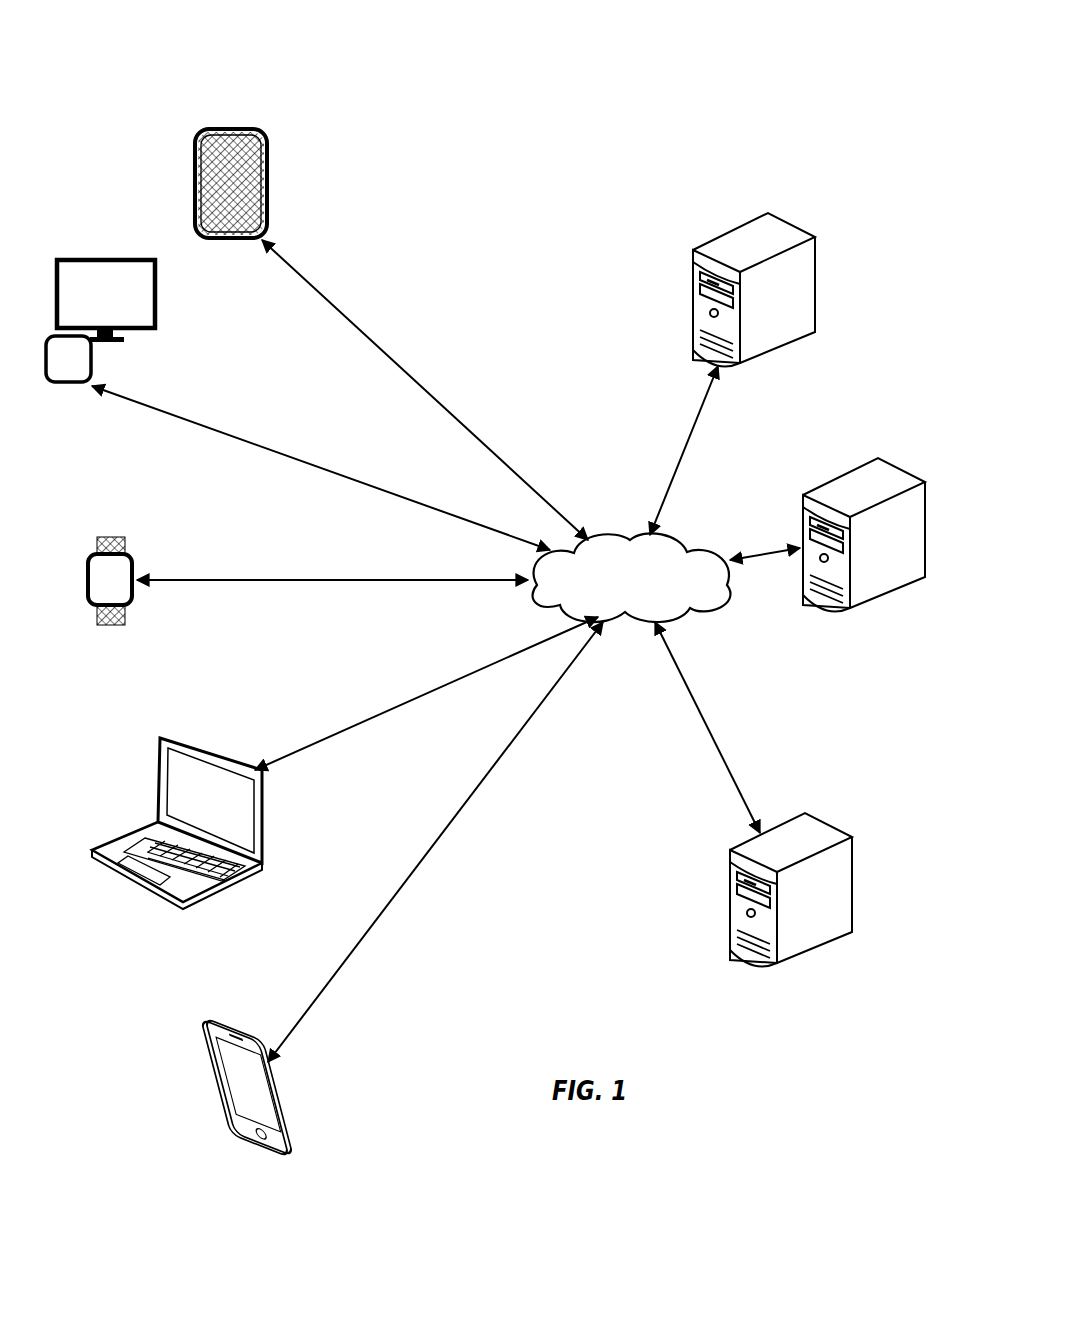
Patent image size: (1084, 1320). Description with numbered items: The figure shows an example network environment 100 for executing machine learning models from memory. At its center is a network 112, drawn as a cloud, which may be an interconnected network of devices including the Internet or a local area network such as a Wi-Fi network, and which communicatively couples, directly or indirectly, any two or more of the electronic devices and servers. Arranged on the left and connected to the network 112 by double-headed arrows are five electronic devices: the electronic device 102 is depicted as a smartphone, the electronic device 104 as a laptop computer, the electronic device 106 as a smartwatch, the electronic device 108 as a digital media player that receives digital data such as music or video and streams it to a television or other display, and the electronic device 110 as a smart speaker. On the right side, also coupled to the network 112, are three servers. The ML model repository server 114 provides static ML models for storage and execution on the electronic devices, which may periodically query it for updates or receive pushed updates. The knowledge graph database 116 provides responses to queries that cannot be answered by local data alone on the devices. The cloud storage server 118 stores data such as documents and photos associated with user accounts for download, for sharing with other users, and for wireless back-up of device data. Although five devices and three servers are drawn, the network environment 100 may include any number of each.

The network environment 100 is at (92, 88).
The electronic device 102 is at (242, 1146).
The electronic device 104 is at (178, 905).
The electronic device 106 is at (100, 625).
The electronic device 108 is at (66, 384).
The electronic device 110 is at (199, 128).
The network 112 is at (606, 622).
The ML model repository server 114 is at (782, 214).
The knowledge graph database 116 is at (893, 459).
The cloud storage server 118 is at (820, 815).